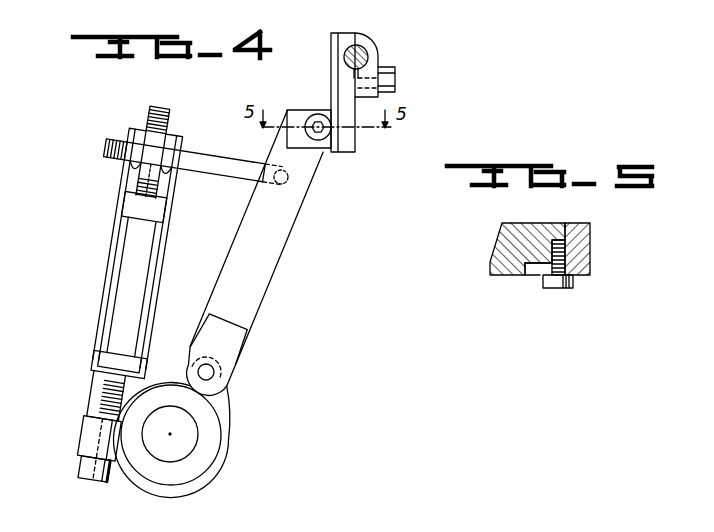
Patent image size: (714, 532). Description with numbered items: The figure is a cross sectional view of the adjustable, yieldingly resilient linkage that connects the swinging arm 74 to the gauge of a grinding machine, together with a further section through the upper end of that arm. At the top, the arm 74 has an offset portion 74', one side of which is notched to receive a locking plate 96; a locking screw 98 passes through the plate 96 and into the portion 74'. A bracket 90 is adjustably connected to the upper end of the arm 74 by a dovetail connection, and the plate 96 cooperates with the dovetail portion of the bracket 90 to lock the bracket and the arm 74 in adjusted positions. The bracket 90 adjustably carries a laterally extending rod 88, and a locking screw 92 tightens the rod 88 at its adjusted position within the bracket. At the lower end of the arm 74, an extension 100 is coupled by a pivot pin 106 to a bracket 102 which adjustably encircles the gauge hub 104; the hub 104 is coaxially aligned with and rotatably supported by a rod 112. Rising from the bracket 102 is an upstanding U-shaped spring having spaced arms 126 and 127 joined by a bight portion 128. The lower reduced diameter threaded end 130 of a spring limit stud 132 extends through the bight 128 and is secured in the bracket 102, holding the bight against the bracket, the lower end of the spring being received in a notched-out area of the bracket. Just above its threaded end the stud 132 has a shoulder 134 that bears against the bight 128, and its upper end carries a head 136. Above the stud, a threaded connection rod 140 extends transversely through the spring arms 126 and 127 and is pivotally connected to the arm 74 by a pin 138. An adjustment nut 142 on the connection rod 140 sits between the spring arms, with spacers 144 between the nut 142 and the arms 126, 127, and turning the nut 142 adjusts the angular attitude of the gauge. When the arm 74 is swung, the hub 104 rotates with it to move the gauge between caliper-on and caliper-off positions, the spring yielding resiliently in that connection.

In FIG. 4, the arm 74 is at (254, 256).
In FIG. 5, the offset portion 74' is at (527, 238).
In FIG. 4, the rod 88 is at (360, 46).
In FIG. 4, the bracket 90 is at (376, 56).
In FIG. 5, the bracket 90 is at (590, 261).
In FIG. 4, the locking screw 92 is at (396, 82).
In FIG. 4, the locking plate 96 is at (299, 111).
In FIG. 5, the locking plate 96 is at (538, 276).
In FIG. 4, the locking screw 98 is at (317, 115).
In FIG. 5, the locking screw 98 is at (560, 283).
In FIG. 4, the extension 100 is at (226, 371).
In FIG. 4, the bracket 102 is at (226, 408).
In FIG. 4, the gauge hub 104 is at (212, 432).
In FIG. 4, the pivot pin 106 is at (222, 379).
In FIG. 4, the rod 112 is at (185, 448).
In FIG. 4, the spring arm 126 is at (118, 242).
In FIG. 4, the spring arm 127 is at (160, 252).
In FIG. 4, the bight portion 128 is at (102, 369).
In FIG. 4, the lower reduced diameter threaded end 130 is at (84, 397).
In FIG. 4, the spring limit stud 132 is at (128, 292).
In FIG. 4, the shoulder 134 is at (102, 358).
In FIG. 4, the head 136 is at (130, 205).
In FIG. 4, the pin 138 is at (288, 179).
In FIG. 4, the threaded connection rod 140 is at (230, 163).
In FIG. 4, the adjustment nut 142 is at (167, 108).
In FIG. 4, the spacers 144 is at (143, 128).